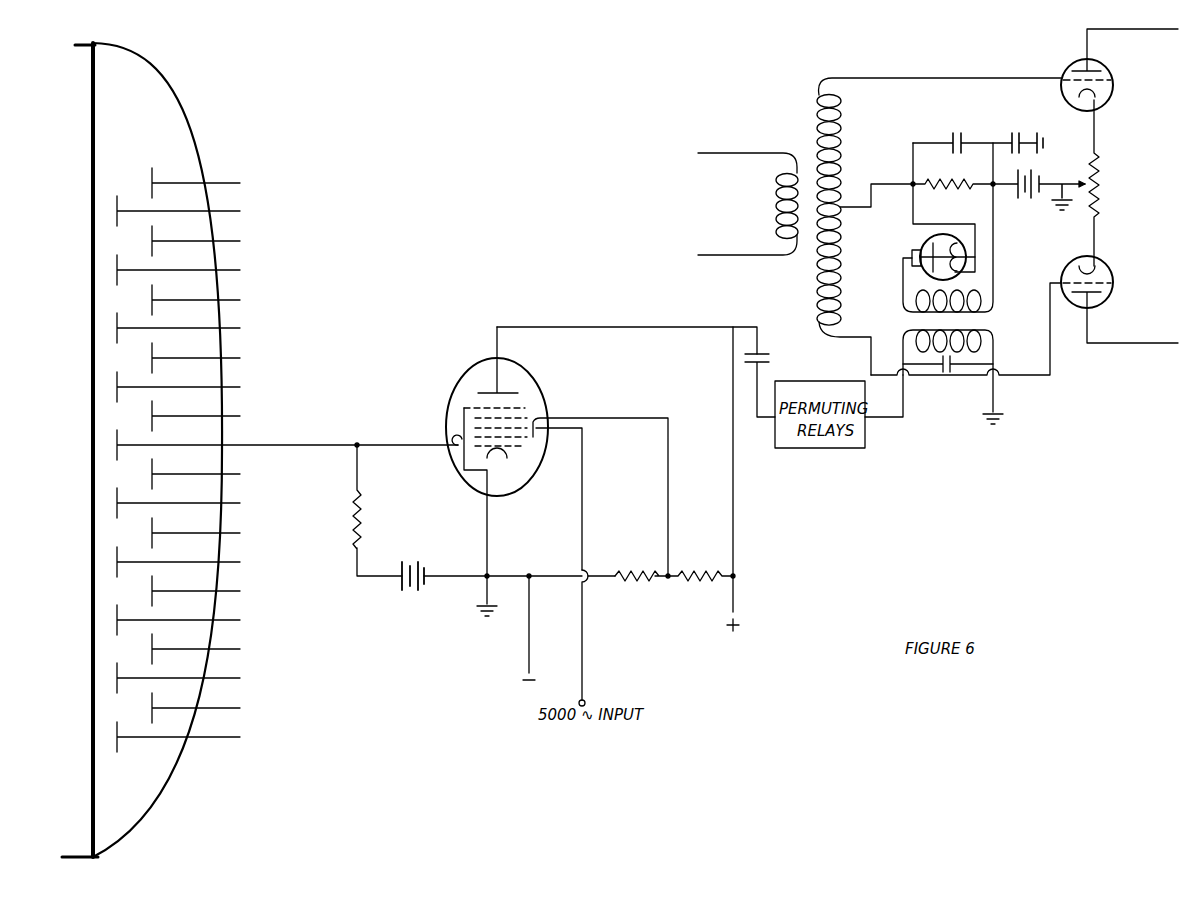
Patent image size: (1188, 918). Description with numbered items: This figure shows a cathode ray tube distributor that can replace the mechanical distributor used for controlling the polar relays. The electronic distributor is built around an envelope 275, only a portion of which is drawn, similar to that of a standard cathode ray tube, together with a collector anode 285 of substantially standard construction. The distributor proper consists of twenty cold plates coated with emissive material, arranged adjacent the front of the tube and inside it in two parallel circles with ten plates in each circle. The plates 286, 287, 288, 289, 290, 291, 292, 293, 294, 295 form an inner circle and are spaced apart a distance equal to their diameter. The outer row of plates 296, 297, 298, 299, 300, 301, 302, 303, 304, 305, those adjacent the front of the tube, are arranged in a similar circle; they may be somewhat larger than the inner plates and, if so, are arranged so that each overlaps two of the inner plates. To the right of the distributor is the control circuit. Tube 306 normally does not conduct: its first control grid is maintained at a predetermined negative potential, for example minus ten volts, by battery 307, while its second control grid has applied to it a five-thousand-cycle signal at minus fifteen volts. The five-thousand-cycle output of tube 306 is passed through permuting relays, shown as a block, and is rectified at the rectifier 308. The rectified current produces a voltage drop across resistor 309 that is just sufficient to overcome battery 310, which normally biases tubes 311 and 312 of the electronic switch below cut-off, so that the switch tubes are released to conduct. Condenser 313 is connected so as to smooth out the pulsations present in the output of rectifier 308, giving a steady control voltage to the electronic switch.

The envelope 275 is at (152, 67).
The collector anode 285 is at (68, 856).
The cold plate 286 is at (113, 209).
The cold plate 287 is at (113, 268).
The cold plate 288 is at (113, 326).
The cold plate 289 is at (113, 385).
The cold plate 290 is at (113, 443).
The cold plate 291 is at (113, 502).
The cold plate 292 is at (113, 560).
The cold plate 293 is at (113, 619).
The cold plate 294 is at (113, 677).
The cold plate 295 is at (113, 736).
The cold plate 296 is at (153, 172).
The cold plate 297 is at (153, 231).
The cold plate 298 is at (153, 290).
The cold plate 299 is at (153, 349).
The cold plate 300 is at (153, 408).
The cold plate 301 is at (153, 466).
The cold plate 302 is at (153, 526).
The cold plate 303 is at (153, 586).
The cold plate 304 is at (153, 645).
The cold plate 305 is at (153, 702).
The tube 306 is at (548, 384).
The battery 307 is at (413, 594).
The rectifier 308 is at (920, 237).
The resistor 309 is at (936, 180).
The battery 310 is at (1043, 178).
The tube 311 is at (1111, 92).
The tube 312 is at (1111, 293).
The condenser 313 is at (958, 137).